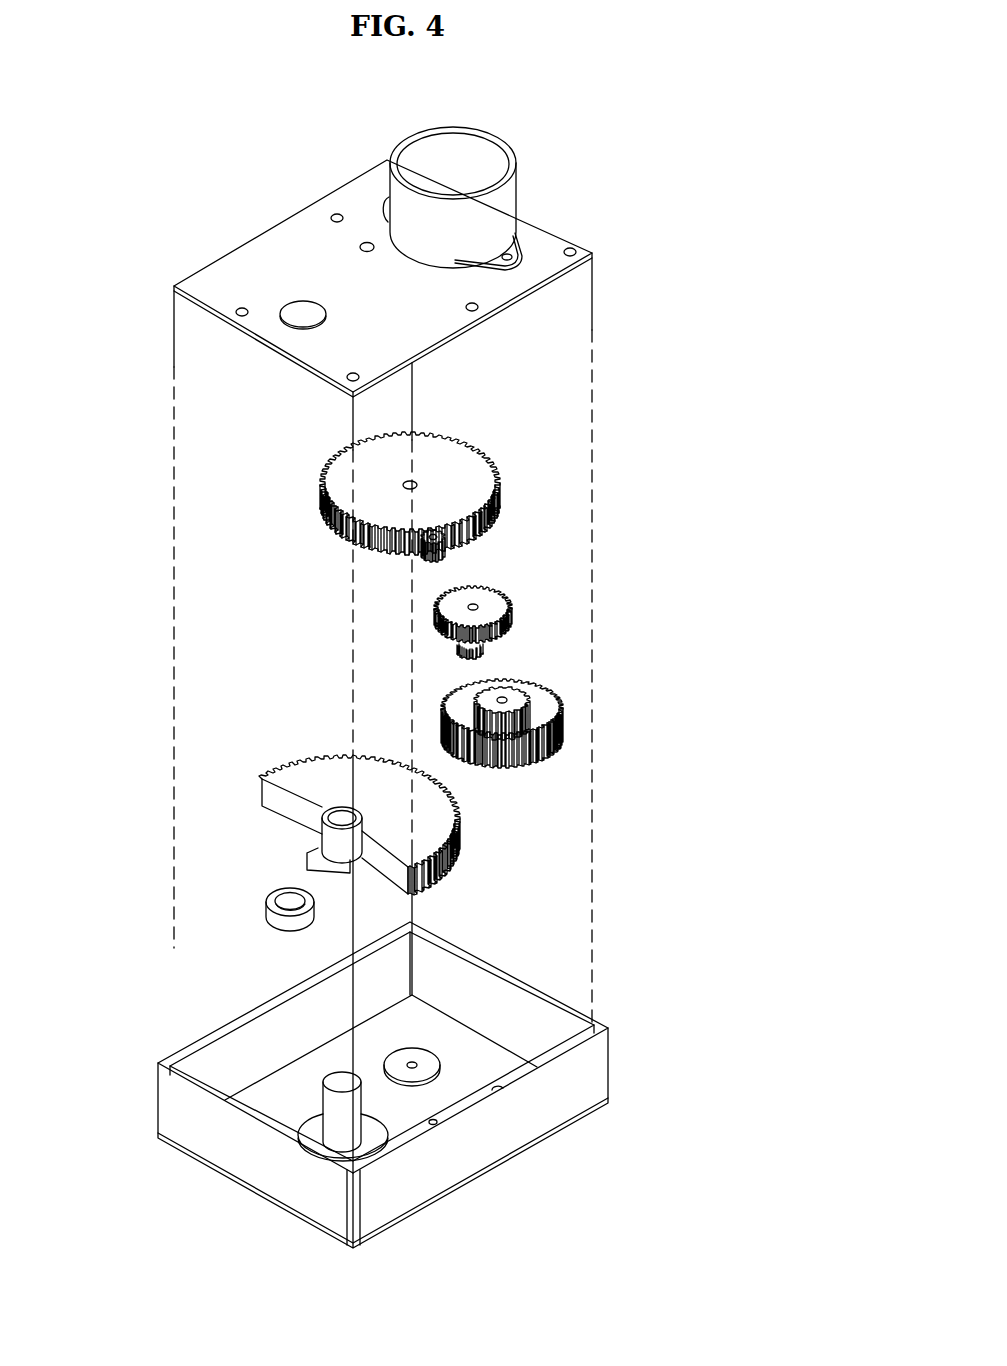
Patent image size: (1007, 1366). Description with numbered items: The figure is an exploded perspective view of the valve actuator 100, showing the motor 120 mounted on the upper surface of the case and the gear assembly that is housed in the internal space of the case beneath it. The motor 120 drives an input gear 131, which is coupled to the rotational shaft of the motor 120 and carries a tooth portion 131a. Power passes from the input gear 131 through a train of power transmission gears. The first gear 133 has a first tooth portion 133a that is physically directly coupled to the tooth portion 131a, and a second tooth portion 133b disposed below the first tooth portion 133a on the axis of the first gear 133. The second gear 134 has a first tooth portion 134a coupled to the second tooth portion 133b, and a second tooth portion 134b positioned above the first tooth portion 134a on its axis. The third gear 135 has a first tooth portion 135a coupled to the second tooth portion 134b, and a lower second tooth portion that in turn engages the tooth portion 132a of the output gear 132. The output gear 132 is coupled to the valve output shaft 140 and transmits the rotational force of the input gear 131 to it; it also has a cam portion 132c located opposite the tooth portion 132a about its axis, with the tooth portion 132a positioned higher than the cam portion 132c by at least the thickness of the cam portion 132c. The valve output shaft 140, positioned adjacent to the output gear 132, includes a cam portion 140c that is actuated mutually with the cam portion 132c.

The valve actuator 100 is at (717, 112).
The motor 120 is at (512, 190).
The input gear 131 is at (548, 554).
The tooth portion 131a is at (443, 552).
The output gear 132 is at (376, 825).
The tooth portion 132a is at (453, 842).
The cam portion 132c is at (307, 857).
The first gear 133 is at (555, 612).
The first tooth portion 133a is at (500, 625).
The second tooth portion 133b is at (483, 649).
The second gear 134 is at (558, 732).
The first tooth portion 134a is at (547, 753).
The second tooth portion 134b is at (527, 713).
The third gear 135 is at (498, 491).
The first tooth portion 135a is at (486, 462).
The valve output shaft 140 is at (195, 916).
The cam portion 140c is at (305, 884).